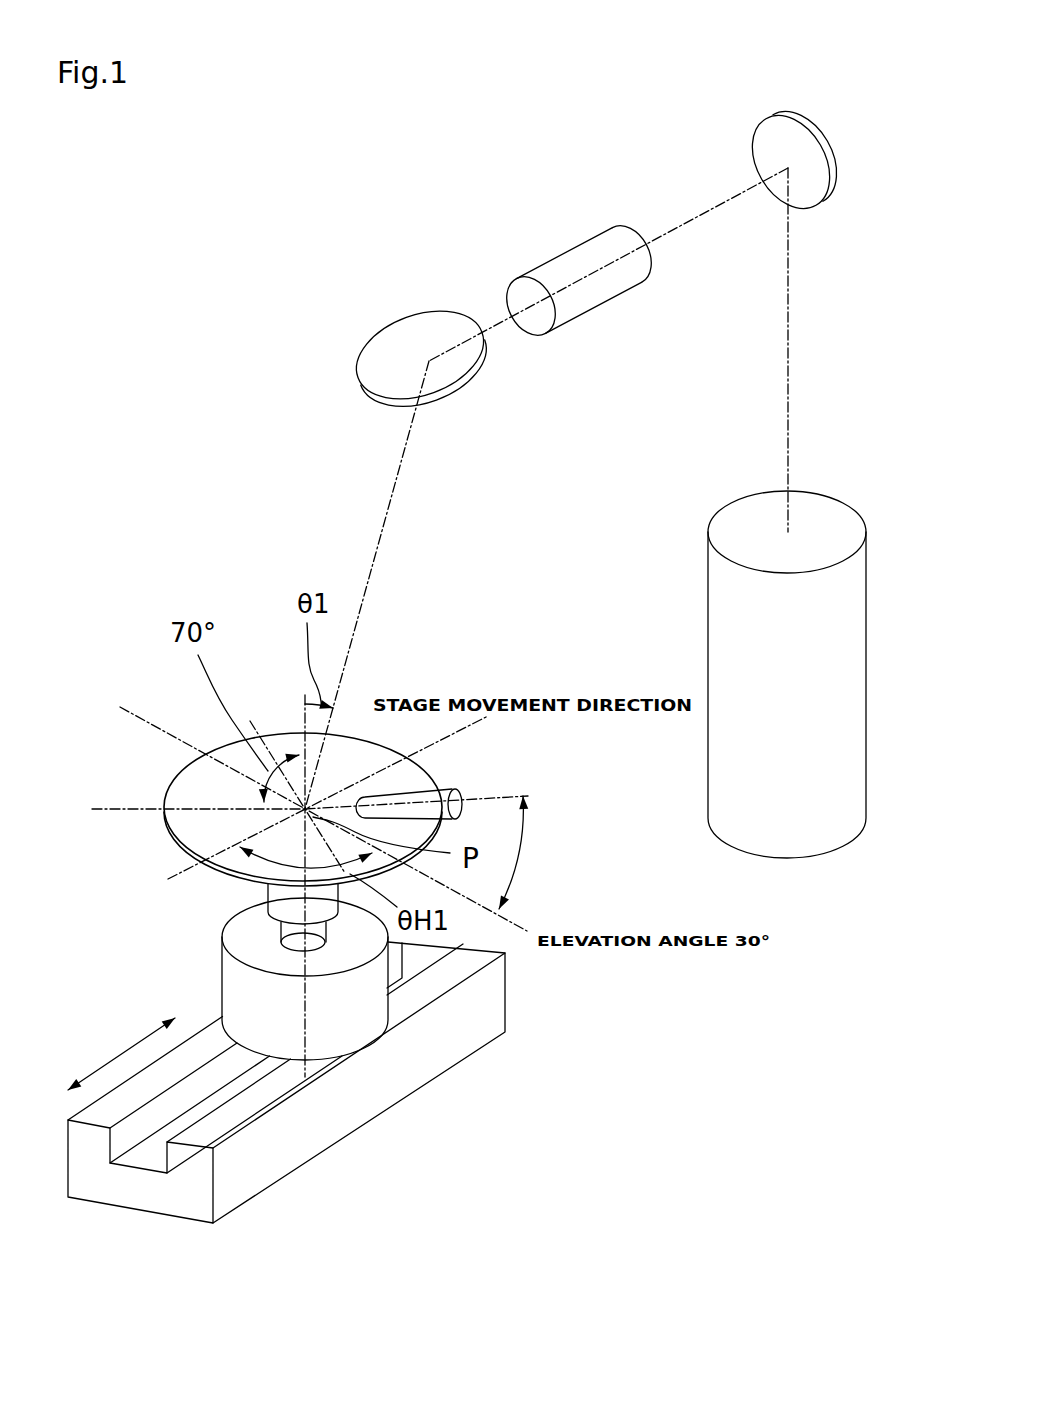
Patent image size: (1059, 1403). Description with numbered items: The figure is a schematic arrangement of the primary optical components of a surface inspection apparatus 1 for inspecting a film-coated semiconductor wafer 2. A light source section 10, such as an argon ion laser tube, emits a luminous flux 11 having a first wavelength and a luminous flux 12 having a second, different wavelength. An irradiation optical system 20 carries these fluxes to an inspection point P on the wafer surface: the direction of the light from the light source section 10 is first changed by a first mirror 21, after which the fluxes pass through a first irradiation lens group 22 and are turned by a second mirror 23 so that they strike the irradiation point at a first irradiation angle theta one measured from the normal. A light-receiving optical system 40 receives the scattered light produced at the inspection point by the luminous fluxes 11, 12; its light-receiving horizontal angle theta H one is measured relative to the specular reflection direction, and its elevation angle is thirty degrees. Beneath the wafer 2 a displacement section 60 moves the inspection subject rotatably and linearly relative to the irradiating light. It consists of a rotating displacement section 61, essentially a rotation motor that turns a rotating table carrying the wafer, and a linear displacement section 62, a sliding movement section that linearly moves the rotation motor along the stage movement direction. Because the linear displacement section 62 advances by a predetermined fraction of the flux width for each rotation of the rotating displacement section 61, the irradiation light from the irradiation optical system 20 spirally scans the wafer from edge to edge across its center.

The surface inspection apparatus 1 is at (313, 197).
The film-coated semiconductor wafer 2 is at (240, 865).
The light source section 10 is at (732, 765).
The luminous flux having a first wavelength 11 is at (380, 538).
The luminous flux having a second wavelength 12 is at (686, 224).
The irradiation optical system 20 is at (452, 217).
The first mirror 21 is at (763, 143).
The first irradiation lens group 22 is at (570, 262).
The second mirror 23 is at (369, 353).
The light-receiving optical system 40 is at (467, 788).
The displacement section 60 is at (296, 1063).
The rotating displacement section 61 is at (353, 1027).
The linear displacement section 62 is at (270, 1162).